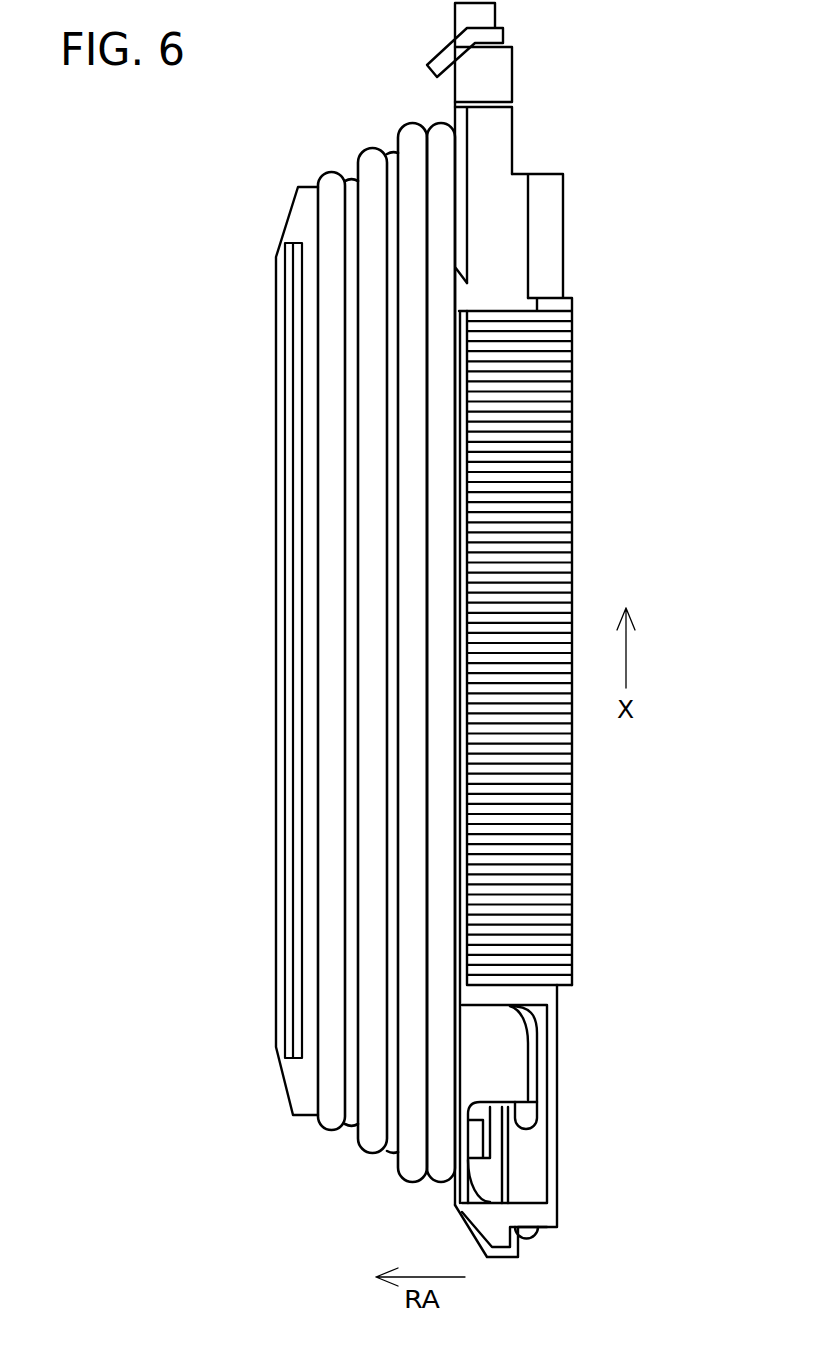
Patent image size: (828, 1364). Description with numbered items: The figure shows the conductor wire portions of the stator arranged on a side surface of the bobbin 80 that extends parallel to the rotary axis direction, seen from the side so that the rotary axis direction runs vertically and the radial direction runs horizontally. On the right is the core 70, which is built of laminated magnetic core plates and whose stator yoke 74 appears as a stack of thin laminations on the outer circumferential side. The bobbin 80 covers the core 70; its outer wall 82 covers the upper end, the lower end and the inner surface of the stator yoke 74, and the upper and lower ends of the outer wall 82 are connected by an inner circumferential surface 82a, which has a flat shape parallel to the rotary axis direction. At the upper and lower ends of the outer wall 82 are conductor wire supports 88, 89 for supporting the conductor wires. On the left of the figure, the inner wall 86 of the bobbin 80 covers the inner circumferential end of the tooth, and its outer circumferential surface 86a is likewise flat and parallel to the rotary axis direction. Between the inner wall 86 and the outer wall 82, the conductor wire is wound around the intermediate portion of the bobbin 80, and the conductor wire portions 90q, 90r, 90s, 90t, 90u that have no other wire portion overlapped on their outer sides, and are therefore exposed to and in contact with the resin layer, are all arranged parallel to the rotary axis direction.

The core 70 is at (598, 316).
The stator yoke 74 is at (558, 462).
The bobbin 80 is at (580, 150).
The outer wall 82 is at (518, 248).
The inner circumferential surface 82a is at (452, 117).
The inner wall 86 is at (298, 225).
The outer circumferential surface 86a is at (317, 290).
The conductor wire support 88 is at (502, 77).
The conductor wire support 89 is at (528, 1215).
The conductor wire portion 90q is at (413, 138).
The conductor wire portion 90r is at (371, 190).
The conductor wire portion 90s is at (388, 162).
The conductor wire portion 90t is at (330, 385).
The conductor wire portion 90u is at (350, 453).